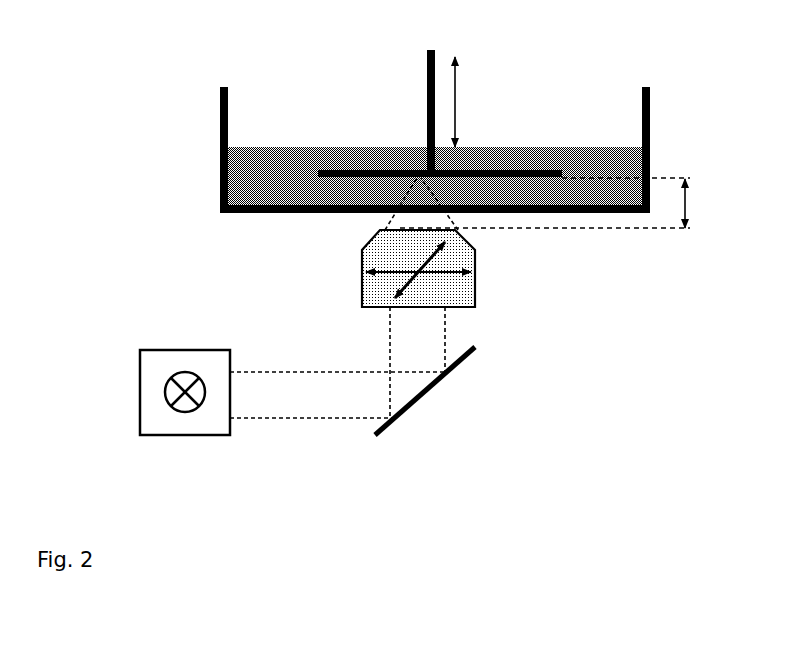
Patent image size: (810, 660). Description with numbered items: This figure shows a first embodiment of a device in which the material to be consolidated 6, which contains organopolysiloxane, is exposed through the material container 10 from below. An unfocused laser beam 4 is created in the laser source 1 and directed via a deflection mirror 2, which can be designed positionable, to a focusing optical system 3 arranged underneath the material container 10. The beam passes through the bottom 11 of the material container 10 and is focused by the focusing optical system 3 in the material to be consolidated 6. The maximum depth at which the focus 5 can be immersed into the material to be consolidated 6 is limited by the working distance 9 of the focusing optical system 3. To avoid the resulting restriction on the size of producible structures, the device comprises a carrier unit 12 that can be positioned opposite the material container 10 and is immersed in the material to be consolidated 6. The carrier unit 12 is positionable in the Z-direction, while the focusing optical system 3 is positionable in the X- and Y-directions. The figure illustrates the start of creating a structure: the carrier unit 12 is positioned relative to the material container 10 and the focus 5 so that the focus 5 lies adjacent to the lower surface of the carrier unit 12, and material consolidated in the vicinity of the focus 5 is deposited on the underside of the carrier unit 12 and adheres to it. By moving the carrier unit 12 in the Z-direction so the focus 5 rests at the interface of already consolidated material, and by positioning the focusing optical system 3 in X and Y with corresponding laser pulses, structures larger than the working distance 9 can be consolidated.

The laser source 1 is at (157, 368).
The deflection mirror 2 is at (428, 393).
The focusing optical system 3 is at (463, 287).
The laser beam 4 is at (320, 397).
The focus 5 is at (415, 167).
The material to be consolidated 6 is at (285, 160).
The working distance 9 is at (699, 203).
The material container 10 is at (205, 188).
The bottom 11 is at (608, 213).
The carrier unit 12 is at (373, 165).